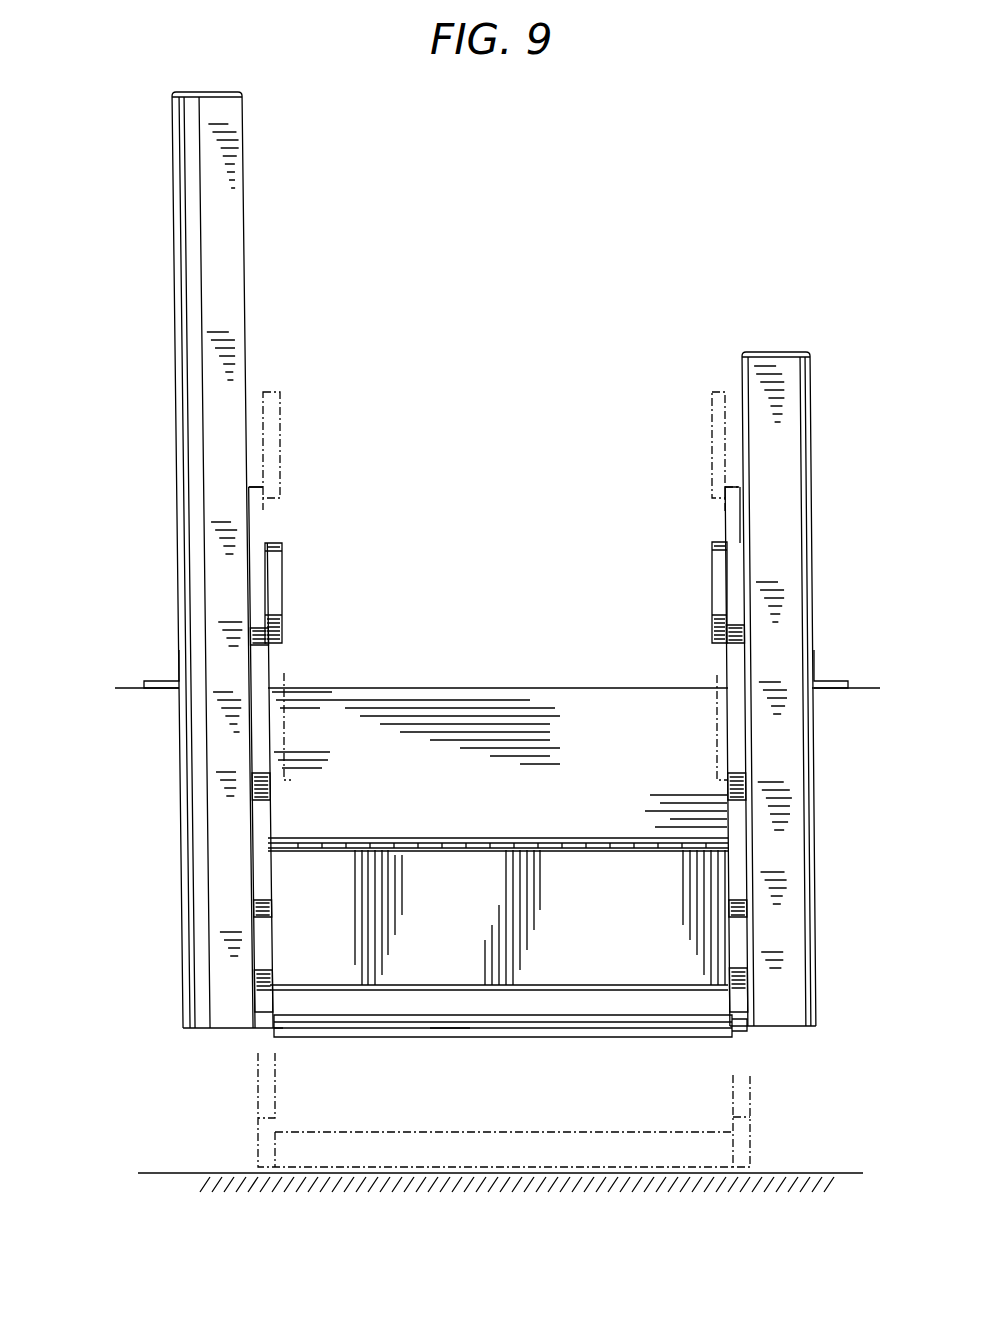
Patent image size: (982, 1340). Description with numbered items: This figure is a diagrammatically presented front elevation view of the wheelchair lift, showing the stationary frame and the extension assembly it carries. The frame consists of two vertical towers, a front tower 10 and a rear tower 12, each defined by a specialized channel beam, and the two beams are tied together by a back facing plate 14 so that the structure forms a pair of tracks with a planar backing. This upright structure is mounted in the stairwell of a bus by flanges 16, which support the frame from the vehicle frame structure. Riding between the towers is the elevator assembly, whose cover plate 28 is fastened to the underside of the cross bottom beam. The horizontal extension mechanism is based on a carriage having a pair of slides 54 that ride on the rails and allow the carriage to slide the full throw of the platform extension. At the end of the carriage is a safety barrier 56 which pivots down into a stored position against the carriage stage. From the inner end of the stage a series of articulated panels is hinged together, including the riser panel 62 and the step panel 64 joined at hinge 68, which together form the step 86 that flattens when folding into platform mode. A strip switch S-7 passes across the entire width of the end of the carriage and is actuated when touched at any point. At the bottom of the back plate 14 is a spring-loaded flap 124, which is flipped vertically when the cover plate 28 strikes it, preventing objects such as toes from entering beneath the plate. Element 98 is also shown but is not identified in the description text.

The front tower 10 is at (748, 346).
The rear tower 12 is at (247, 195).
The back facing plate 14 is at (592, 749).
The flanges 16 is at (162, 686).
The cover plate 28 is at (742, 1030).
The slides 54 is at (267, 970).
The safety barrier 56 is at (445, 988).
The riser panel 62 is at (582, 903).
The step panel 64 is at (433, 838).
The hinge 68 is at (607, 838).
The step 86 is at (498, 803).
The latch block 98 is at (280, 458).
The spring-loaded flap 124 is at (358, 1040).
The strip switch S-7 is at (447, 1030).